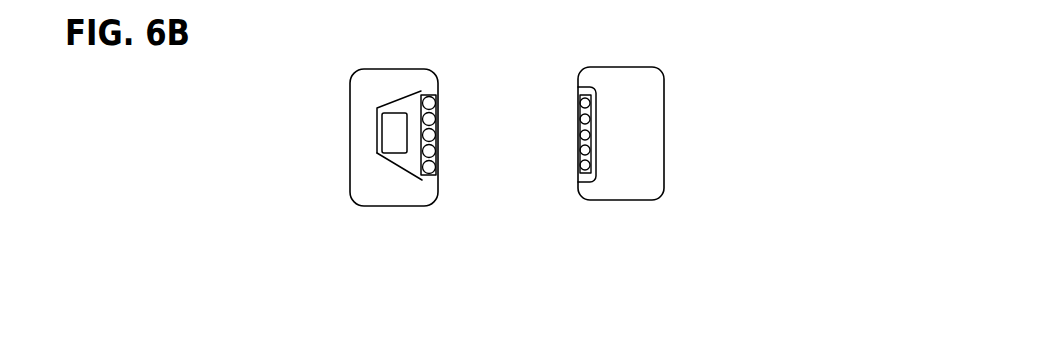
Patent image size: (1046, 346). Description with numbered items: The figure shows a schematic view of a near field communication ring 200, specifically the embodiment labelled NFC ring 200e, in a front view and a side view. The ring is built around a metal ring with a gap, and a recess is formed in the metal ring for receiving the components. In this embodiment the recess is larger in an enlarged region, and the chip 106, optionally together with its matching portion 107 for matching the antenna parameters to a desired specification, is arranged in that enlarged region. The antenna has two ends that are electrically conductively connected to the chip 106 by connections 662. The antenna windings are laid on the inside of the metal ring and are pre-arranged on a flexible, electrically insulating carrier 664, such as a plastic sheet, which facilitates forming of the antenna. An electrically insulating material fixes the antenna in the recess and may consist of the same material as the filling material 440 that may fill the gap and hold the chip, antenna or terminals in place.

The near field communication ring 200 is at (686, 129).
The NFC ring 200e is at (630, 140).
The connections 662 is at (393, 162).
The carrier 664 is at (591, 147).
The chip 106 is at (293, 127).
The matching portion 107 is at (390, 135).
The filling material 440 is at (425, 170).